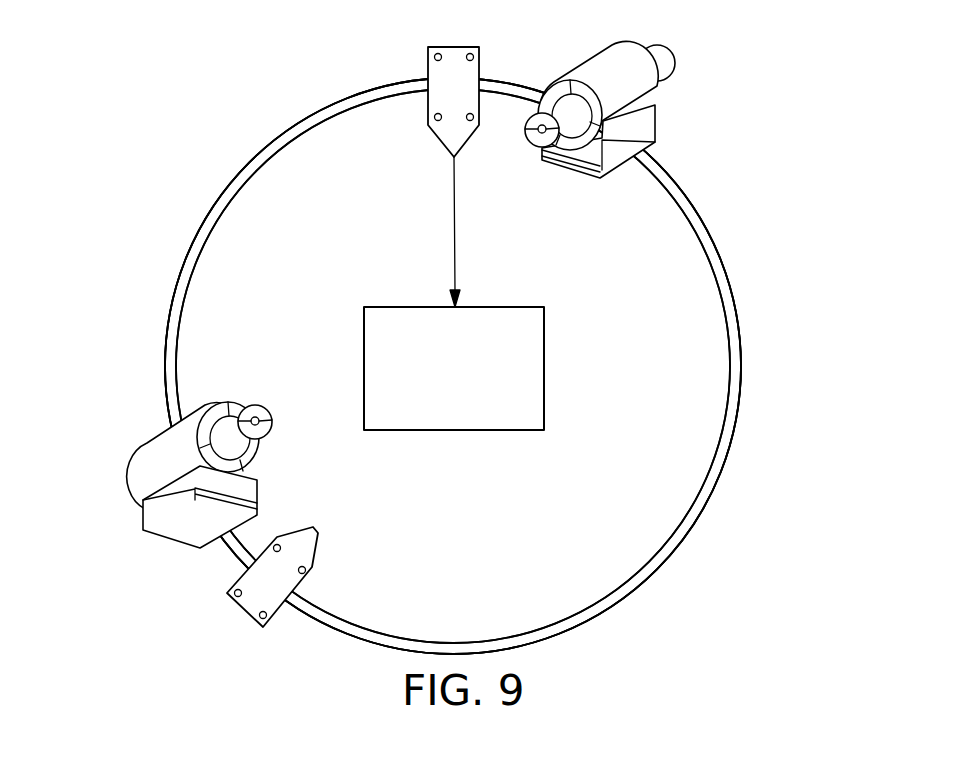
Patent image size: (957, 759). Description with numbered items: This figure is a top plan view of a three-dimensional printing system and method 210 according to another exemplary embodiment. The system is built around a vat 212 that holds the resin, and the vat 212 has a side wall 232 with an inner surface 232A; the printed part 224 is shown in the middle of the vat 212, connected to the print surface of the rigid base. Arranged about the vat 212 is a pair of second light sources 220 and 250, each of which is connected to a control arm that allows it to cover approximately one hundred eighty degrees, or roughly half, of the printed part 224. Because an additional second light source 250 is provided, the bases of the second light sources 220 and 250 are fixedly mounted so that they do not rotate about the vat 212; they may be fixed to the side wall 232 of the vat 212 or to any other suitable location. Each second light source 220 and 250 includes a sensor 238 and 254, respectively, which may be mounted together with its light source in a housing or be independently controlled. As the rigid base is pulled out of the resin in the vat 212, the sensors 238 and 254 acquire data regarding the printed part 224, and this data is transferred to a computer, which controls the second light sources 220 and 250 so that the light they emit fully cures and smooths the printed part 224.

The 3D printing system and method 210 is at (136, 331).
The vat 212 is at (739, 307).
The second light source 220 is at (428, 66).
The printed part 224 is at (545, 352).
The side wall 232 is at (727, 465).
The ring inner surface 232A is at (218, 214).
The sensor 238 is at (658, 98).
The second light source 250 is at (243, 608).
The sensor 254 is at (141, 450).